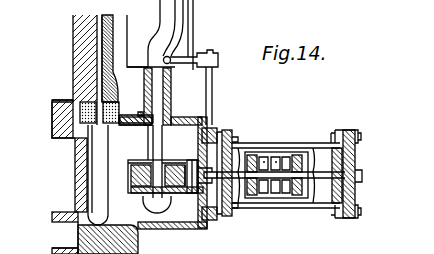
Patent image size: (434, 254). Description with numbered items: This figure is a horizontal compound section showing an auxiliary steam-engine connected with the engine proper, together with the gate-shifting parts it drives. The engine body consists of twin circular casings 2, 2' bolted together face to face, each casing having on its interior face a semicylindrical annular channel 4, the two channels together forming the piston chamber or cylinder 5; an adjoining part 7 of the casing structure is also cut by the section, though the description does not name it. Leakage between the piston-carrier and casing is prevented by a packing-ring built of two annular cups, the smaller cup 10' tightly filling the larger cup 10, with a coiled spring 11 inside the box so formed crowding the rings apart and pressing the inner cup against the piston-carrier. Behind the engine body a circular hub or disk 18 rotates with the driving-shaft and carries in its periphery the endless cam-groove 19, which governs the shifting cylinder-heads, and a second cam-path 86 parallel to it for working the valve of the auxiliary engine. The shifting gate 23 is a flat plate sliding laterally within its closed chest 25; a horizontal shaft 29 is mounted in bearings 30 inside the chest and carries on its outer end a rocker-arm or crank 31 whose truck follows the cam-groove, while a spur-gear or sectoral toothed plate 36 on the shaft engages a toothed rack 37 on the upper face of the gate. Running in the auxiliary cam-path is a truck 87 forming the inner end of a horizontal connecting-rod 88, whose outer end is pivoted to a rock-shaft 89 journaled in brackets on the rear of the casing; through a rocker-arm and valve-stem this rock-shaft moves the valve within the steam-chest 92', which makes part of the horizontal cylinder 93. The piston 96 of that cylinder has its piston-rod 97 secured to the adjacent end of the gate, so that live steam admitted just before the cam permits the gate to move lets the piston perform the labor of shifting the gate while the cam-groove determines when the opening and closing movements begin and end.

The annular passage 7 is at (97, 70).
The circular casing 2 is at (63, 109).
The circular casing 2' is at (117, 58).
The larger annular cup 10 is at (62, 112).
The smaller annular cup 10' is at (52, 119).
The coiled spring 11 is at (118, 111).
The hub or disk 18 is at (143, 33).
The cam-groove 19 is at (166, 28).
The rocker-arm or crank 31 is at (156, 96).
The second cam-path 86 is at (185, 23).
The truck 87 is at (171, 59).
The connecting-rod 88 is at (200, 67).
The rock-shaft 89 is at (218, 96).
The semicylindrical annular channel 4 is at (88, 172).
The piston chamber or cylinder 5 is at (98, 175).
The shifting gate 23 is at (136, 142).
The horizontal shaft 29 is at (154, 161).
The toothed rack 37 is at (190, 165).
The spur-gear or sectoral toothed plate 36 is at (145, 206).
The chest 25 is at (172, 233).
The bearings 30 is at (189, 195).
The horizontal cylinder 93 is at (286, 168).
The piston 96 is at (289, 174).
The piston-rod 97 is at (281, 177).
The steam-chest 92' is at (249, 180).